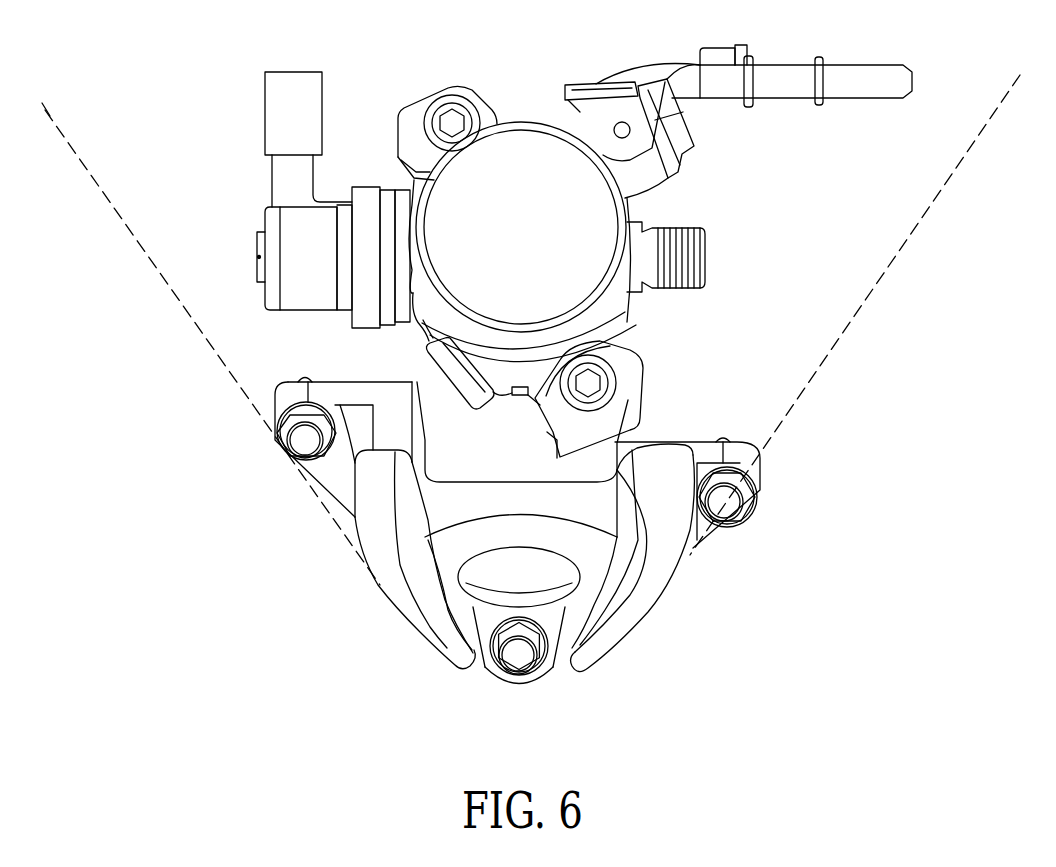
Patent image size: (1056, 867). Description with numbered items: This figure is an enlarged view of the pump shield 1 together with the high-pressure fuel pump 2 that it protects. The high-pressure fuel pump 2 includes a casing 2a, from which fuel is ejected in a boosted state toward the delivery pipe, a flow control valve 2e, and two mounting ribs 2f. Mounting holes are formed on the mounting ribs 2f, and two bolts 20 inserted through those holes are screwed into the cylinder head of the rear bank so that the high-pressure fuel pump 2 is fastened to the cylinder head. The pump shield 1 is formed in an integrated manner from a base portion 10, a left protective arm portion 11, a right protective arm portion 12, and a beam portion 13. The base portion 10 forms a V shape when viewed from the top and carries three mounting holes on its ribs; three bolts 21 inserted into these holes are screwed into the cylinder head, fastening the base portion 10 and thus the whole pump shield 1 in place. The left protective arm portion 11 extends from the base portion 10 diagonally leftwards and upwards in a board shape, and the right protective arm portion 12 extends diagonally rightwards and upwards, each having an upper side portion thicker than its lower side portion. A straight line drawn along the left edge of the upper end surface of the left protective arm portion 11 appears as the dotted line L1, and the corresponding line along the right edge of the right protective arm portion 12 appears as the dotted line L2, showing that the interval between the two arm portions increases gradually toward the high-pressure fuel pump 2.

The pump shield 1 is at (516, 564).
The left protective arm portion 11 is at (516, 531).
The high-pressure fuel pump 2 is at (551, 233).
The casing 2a is at (538, 120).
The flow control valve 2e is at (268, 240).
The mounting ribs 2f is at (408, 118).
The base portion 10 is at (320, 476).
The right protective arm portion 12 is at (655, 600).
The beam portion 13 is at (483, 482).
The bolts 20 is at (447, 99).
The bolts 21 is at (303, 438).
The dotted line L1 is at (47, 112).
The dotted line L2 is at (948, 186).